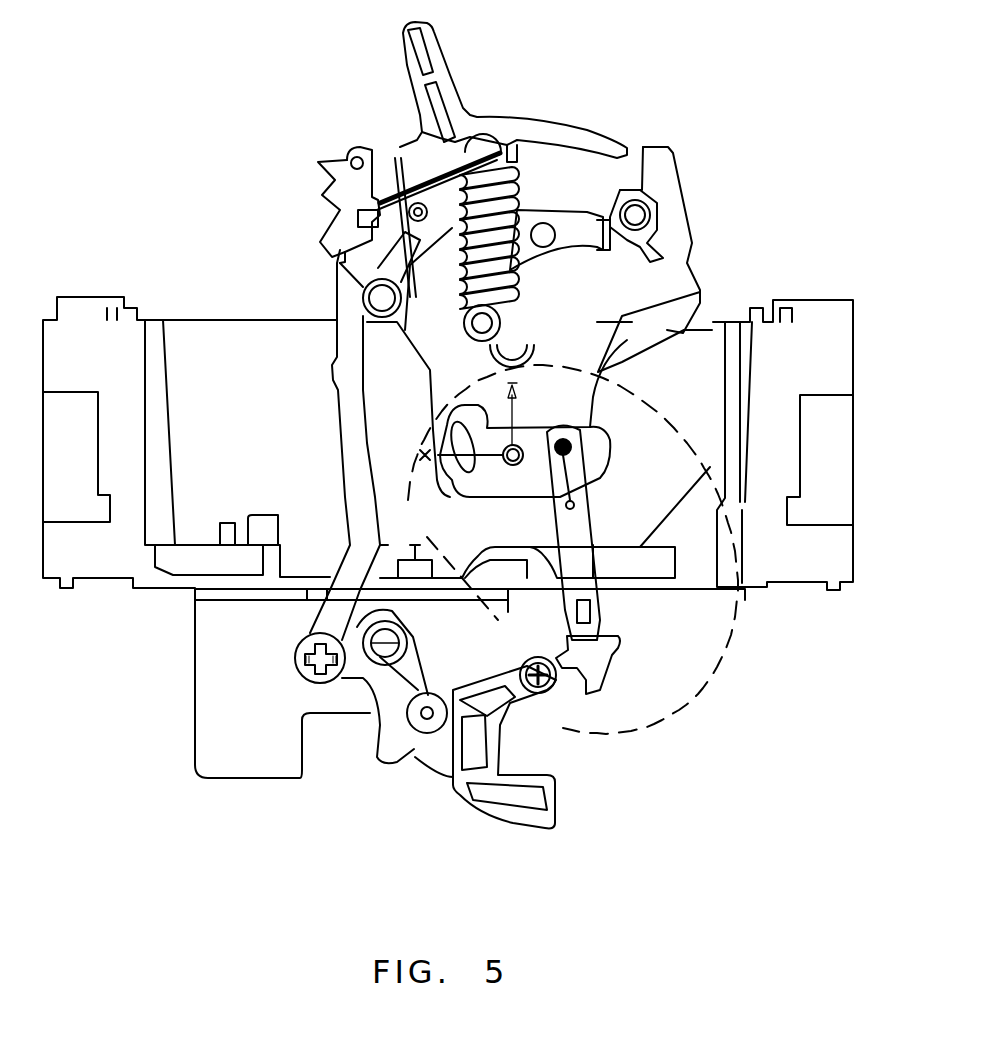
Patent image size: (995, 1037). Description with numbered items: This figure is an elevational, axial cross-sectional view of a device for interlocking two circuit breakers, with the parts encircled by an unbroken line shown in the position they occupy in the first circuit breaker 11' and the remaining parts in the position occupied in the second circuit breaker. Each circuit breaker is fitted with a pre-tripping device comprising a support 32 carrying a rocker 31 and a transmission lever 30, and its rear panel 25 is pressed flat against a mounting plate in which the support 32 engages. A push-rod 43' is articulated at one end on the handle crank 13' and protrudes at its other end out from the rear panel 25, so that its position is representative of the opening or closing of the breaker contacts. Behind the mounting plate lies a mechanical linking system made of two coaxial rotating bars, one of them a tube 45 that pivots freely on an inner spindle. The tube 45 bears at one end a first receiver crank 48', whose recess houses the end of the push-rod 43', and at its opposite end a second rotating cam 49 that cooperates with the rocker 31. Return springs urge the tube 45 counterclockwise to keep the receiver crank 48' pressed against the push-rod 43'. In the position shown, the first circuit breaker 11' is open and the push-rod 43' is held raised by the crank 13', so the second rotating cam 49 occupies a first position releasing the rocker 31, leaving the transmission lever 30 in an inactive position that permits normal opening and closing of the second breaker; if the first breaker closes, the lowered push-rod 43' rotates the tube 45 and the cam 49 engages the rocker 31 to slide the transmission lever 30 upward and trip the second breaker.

The first circuit breaker 11' is at (586, 549).
The crank 13' is at (610, 339).
The rear panel 25 is at (797, 590).
The transmission lever 30 is at (343, 333).
The rocker 31 is at (370, 718).
The support 32 is at (223, 718).
The push-rod 43' is at (606, 532).
The tube 45 is at (548, 688).
The first receiver crank 48' is at (644, 702).
The second rotating cam 49 is at (495, 790).